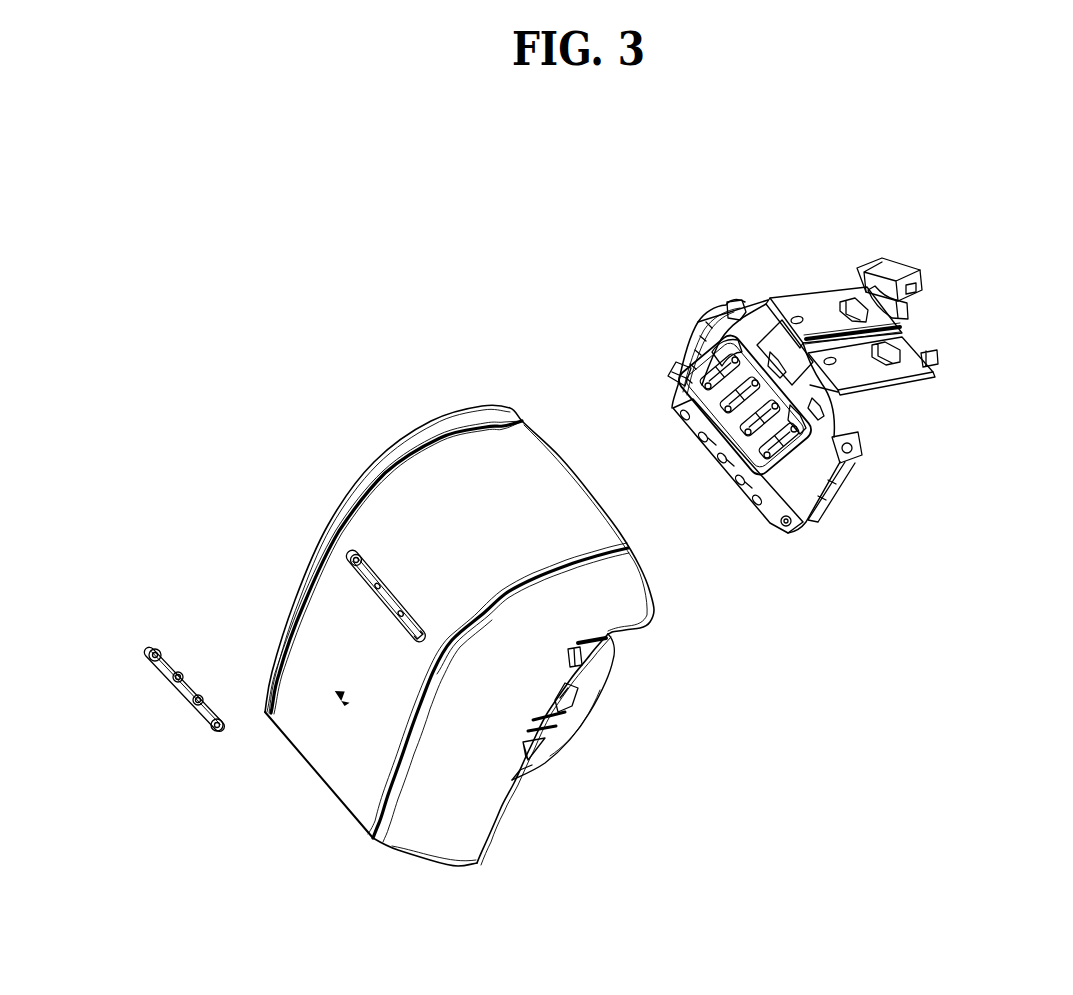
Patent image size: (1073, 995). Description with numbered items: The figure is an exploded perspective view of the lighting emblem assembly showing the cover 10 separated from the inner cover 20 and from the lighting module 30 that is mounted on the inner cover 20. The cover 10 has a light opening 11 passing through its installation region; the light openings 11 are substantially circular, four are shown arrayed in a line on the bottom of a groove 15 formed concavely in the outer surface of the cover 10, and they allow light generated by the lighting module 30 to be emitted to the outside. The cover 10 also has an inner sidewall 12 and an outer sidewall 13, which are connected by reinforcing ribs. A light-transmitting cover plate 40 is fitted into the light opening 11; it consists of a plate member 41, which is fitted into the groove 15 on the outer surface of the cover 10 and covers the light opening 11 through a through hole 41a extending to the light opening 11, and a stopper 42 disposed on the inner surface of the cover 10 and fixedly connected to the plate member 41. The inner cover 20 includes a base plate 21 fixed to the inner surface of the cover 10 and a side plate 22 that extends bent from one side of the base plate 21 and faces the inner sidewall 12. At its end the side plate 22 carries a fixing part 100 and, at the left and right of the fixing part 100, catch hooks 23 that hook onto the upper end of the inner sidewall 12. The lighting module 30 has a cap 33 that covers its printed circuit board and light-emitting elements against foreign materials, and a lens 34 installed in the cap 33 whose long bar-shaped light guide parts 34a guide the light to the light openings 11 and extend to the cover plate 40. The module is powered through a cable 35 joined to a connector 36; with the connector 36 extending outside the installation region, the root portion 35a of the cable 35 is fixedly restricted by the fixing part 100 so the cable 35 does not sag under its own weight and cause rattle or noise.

The fixing part 100 is at (987, 298).
The cover 10 is at (469, 635).
The light opening 11 is at (347, 556).
The inner sidewall 12 is at (593, 684).
The outer sidewall 13 is at (633, 592).
The groove 15 is at (352, 582).
The inner cover 20 is at (892, 329).
The base plate 21 is at (843, 448).
The side plate 22 is at (893, 388).
The catch hook 23 is at (924, 354).
The lighting module 30 is at (753, 416).
The cap 33 is at (712, 431).
The lens 34 is at (712, 333).
The light guide part 34a is at (681, 378).
The cable 35 is at (792, 297).
The root portion 35a is at (855, 281).
The connector 36 is at (895, 265).
The cover plate 40 is at (142, 678).
The plate member 41 is at (158, 670).
The through hole 41a is at (148, 658).
The stopper 42 is at (161, 655).